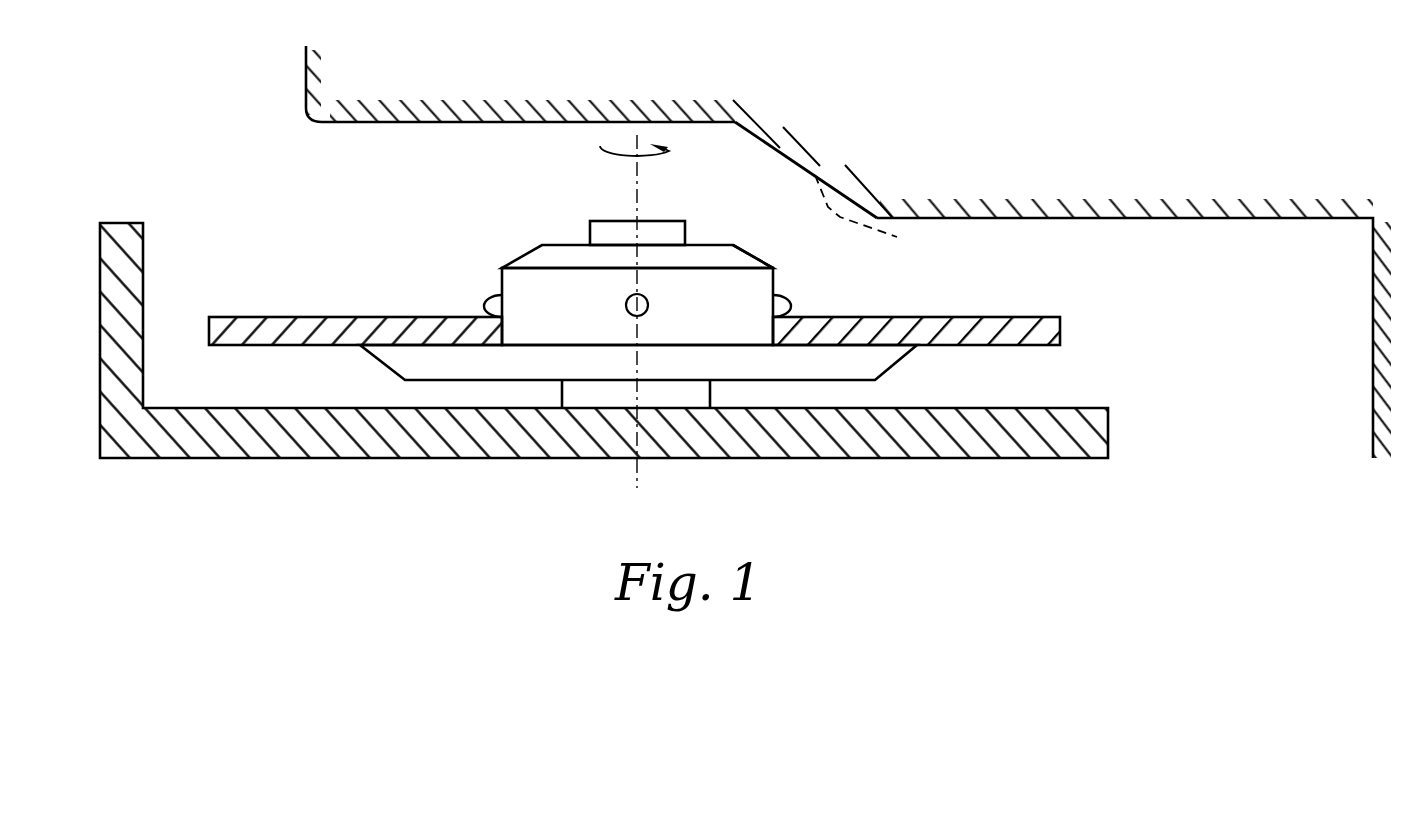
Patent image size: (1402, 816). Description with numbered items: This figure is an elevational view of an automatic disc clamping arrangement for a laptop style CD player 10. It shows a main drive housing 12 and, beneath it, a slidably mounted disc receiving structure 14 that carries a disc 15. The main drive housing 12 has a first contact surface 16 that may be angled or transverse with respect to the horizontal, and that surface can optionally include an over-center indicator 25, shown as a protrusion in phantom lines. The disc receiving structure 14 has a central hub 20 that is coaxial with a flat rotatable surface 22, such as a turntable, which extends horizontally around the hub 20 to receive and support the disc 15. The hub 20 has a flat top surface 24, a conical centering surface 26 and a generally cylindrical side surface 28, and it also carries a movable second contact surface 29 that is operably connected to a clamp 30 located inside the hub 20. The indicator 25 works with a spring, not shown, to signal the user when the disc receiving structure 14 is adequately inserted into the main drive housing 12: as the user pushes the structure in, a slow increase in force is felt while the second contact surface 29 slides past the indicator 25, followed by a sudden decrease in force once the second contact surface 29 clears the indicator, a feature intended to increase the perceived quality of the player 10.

The laptop style CD player 10 is at (700, 73).
The main drive housing 12 is at (848, 252).
The disc receiving structure 14 is at (597, 459).
The disc 15 is at (417, 333).
The first contact surface 16 is at (818, 163).
The central hub 20 is at (636, 311).
The flat rotatable surface 22 is at (638, 376).
The flat top surface 24 is at (712, 245).
The over-center indicator 25 is at (870, 218).
The conical centering surface 26 is at (753, 255).
The cylindrical side surface 28 is at (753, 287).
The second contact surface 29 is at (643, 230).
The clamp 30 is at (472, 293).